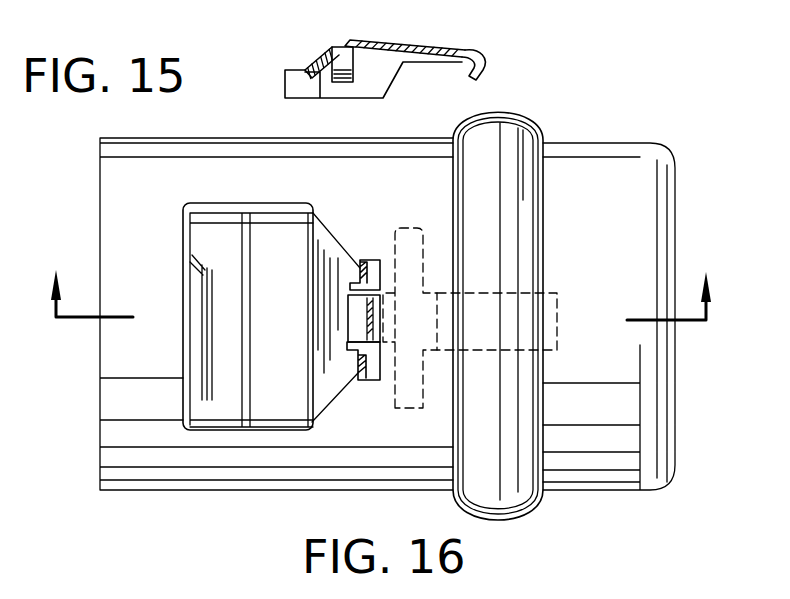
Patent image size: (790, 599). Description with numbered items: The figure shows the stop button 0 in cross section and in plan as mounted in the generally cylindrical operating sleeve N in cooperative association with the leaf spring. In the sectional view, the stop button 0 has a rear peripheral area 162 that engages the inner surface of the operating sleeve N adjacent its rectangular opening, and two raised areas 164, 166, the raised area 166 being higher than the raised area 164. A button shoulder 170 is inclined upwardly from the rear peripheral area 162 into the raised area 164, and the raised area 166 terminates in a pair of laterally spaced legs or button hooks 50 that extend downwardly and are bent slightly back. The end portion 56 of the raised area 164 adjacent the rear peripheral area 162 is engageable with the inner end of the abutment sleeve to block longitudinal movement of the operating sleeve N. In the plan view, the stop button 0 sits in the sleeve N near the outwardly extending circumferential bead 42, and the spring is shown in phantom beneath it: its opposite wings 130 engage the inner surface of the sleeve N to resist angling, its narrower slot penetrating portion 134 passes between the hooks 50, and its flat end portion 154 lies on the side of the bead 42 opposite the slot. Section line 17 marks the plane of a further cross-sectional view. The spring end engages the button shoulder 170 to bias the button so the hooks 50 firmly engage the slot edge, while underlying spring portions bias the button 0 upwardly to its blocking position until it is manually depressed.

In FIG. 15, the stop button 0 is at (474, 40).
In FIG. 16, the stop button 0 is at (266, 236).
In FIG. 16, the circumferential bead 42 is at (519, 113).
In FIG. 15, the button legs or hooks 50 is at (478, 66).
In FIG. 16, the button legs or hooks 50 is at (368, 260).
In FIG. 15, the end portions of raised area 56 is at (300, 70).
In FIG. 16, the wings 130 is at (408, 230).
In FIG. 16, the slot penetrating portion 134 is at (363, 318).
In FIG. 16, the flat end portion 154 is at (568, 300).
In FIG. 15, the rear peripheral area 162 is at (302, 71).
In FIG. 15, the raised area 164 is at (335, 55).
In FIG. 16, the raised area 164 is at (217, 408).
In FIG. 15, the raised area 166 is at (365, 42).
In FIG. 16, the raised area 166 is at (278, 407).
In FIG. 15, the button shoulder 170 is at (324, 72).
In FIG. 16, the button shoulder 170 is at (197, 285).
In FIG. 16, the section line 17— 17 is at (385, 275).
In FIG. 16, the operating sleeve N is at (573, 134).